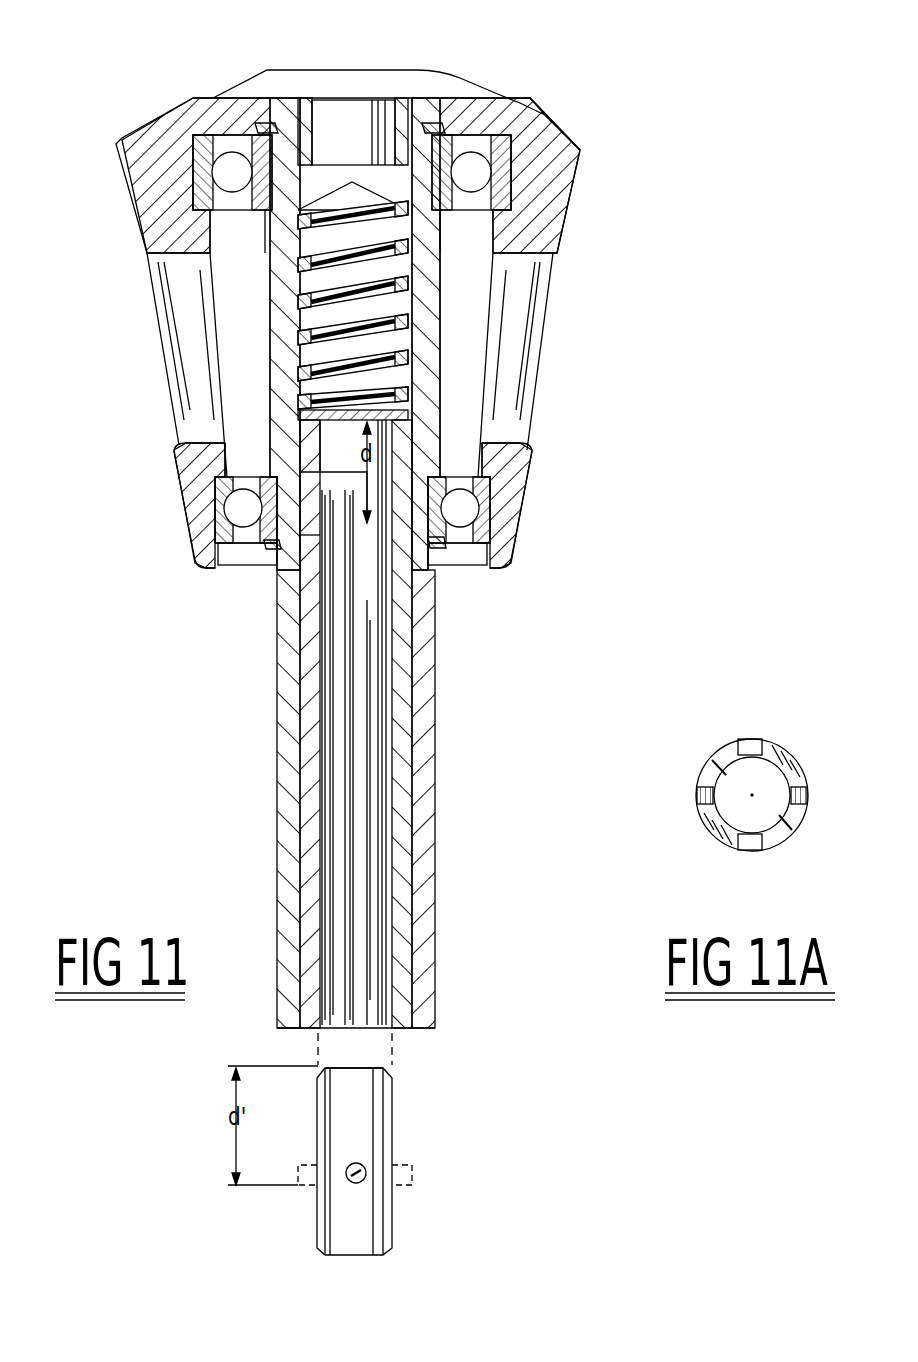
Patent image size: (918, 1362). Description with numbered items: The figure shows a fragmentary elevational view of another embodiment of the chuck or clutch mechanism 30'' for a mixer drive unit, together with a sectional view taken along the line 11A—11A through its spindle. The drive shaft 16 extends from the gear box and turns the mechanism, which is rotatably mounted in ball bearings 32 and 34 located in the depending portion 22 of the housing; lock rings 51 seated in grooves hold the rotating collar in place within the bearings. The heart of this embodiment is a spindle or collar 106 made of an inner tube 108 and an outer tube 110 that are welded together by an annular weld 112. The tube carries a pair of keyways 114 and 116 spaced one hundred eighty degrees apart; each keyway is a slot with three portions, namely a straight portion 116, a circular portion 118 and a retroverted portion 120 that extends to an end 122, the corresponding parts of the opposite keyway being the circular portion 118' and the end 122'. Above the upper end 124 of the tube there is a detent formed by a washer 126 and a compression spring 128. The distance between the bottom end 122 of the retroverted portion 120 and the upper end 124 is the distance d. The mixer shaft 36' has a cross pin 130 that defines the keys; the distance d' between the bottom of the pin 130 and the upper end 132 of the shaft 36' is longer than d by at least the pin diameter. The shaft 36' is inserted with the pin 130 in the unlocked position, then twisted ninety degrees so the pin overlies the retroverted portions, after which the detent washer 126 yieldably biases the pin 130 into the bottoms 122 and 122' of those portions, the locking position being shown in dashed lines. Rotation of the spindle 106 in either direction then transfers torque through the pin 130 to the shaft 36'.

In FIG. 11, the shaft 16 is at (343, 108).
In FIG. 11, the lock rings 51 is at (440, 107).
In FIG. 11, the ball bearing 32 is at (512, 152).
In FIG. 11, the compression spring 128 is at (300, 300).
In FIG. 11, the spindle or collar 106 is at (436, 305).
In FIG. 11, the washer 126 is at (268, 367).
In FIG. 11, the upper end 124 is at (418, 406).
In FIG. 11, the clutch mechanism 30'' is at (152, 375).
In FIG. 11, the section line 11A is at (262, 472).
In FIG. 11, the circular portion 118 is at (335, 446).
In FIG. 11A, the circular portion 118 is at (690, 747).
In FIG. 11, the retroverted portion 120 is at (312, 500).
In FIG. 11, the ball bearing 34 is at (484, 492).
In FIG. 11, the depending portion 22 is at (518, 543).
In FIG. 11, the end 122 is at (268, 581).
In FIG. 11A, the end 122 is at (676, 791).
In FIG. 11, the keyway portion 116 is at (362, 697).
In FIG. 11A, the keyway portion 116 is at (762, 742).
In FIG. 11, the keyway 114 is at (333, 716).
In FIG. 11A, the keyway 114 is at (755, 852).
In FIG. 11, the inner tube 108 is at (428, 738).
In FIG. 11, the outer tube 110 is at (410, 797).
In FIG. 11, the annular weld 112 is at (300, 1028).
In FIG. 11, the upper end 132 is at (362, 1070).
In FIG. 11, the cross pin 130 is at (361, 1165).
In FIG. 11, the mixer shaft 36' is at (373, 1144).
In FIG. 11A, the end 122' is at (831, 791).
In FIG. 11A, the circular portion 118' is at (818, 836).